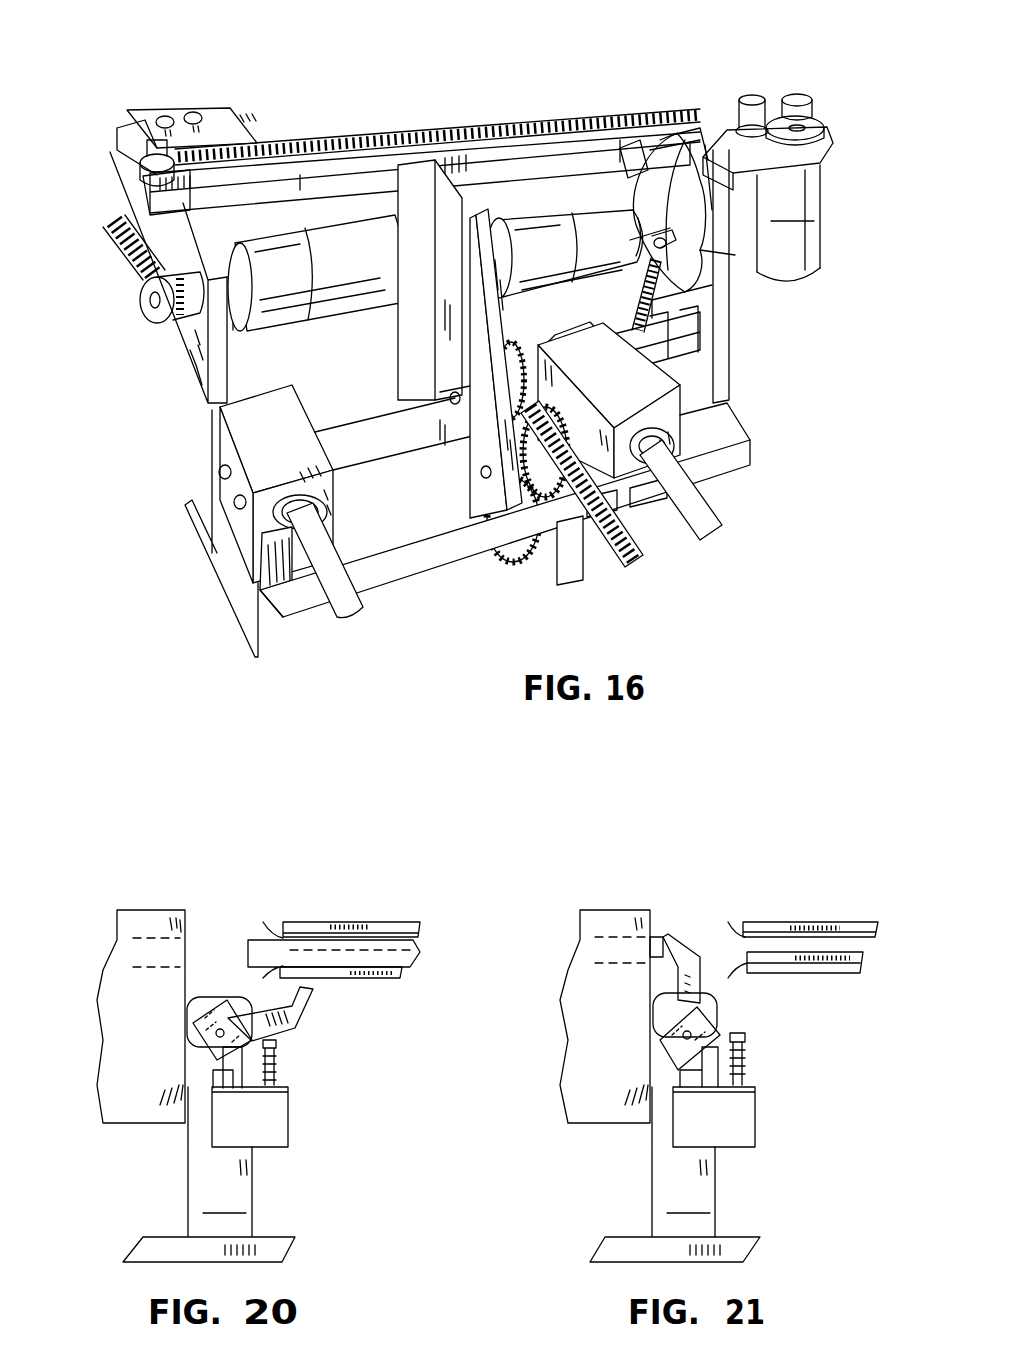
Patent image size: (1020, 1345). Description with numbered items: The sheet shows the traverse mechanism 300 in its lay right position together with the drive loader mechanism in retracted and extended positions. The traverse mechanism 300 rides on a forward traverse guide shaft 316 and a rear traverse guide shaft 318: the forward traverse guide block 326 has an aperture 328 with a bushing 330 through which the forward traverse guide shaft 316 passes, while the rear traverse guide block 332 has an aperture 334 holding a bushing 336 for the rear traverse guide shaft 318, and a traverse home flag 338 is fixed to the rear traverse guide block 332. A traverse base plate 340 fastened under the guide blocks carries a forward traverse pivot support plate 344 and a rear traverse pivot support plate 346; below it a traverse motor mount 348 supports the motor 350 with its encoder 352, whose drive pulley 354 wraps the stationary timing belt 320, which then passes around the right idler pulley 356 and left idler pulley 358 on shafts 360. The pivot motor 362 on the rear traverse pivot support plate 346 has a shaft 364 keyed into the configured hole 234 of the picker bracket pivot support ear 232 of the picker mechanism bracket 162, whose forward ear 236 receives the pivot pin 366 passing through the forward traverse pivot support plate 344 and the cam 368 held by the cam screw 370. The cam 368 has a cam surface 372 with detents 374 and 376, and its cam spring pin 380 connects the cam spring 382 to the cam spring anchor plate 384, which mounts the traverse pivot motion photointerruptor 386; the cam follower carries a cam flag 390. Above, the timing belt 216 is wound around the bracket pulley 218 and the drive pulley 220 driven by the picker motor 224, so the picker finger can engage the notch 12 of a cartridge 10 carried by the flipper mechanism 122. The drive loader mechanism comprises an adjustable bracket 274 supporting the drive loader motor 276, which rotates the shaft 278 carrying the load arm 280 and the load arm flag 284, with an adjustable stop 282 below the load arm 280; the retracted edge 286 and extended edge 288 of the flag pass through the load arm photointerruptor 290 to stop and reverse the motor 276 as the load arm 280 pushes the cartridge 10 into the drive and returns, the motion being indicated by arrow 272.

In FIG. 16, the traverse mechanism 300 is at (436, 82).
In FIG. 16, the picker bracket pivot support ear 232 is at (410, 160).
In FIG. 16, the bracket pulley 218 is at (140, 168).
In FIG. 16, the timing belt 216 is at (553, 120).
In FIG. 16, the picker mechanism bracket 162 is at (498, 158).
In FIG. 16, the traverse home flag 338 is at (222, 587).
In FIG. 16, the shaft 364 is at (360, 300).
In FIG. 16, the configured hole 234 is at (440, 310).
In FIG. 16, the right idler pulley 356 is at (470, 366).
In FIG. 16, the pivot motor 362 is at (558, 268).
In FIG. 16, the pivot pin 366 is at (636, 230).
In FIG. 16, the cam spring pin 380 is at (652, 243).
In FIG. 16, the cam spring 382 is at (629, 295).
In FIG. 16, the cam spring anchor plate 384 is at (600, 345).
In FIG. 16, the cam flag 390 is at (660, 318).
In FIG. 16, the cam surface 372 is at (735, 292).
In FIG. 16, the detent 374 is at (735, 256).
In FIG. 16, the detent 376 is at (672, 135).
In FIG. 16, the cam 368 is at (622, 148).
In FIG. 16, the cam screw 370 is at (708, 148).
In FIG. 16, the picker bracket pivot support ear 236 is at (652, 148).
In FIG. 16, the forward traverse pivot support plate 344 is at (730, 383).
In FIG. 16, the traverse pivot motion photointerruptor 386 is at (712, 352).
In FIG. 16, the picker motor 224 is at (768, 204).
In FIG. 16, the drive pulley 220 is at (825, 105).
In FIG. 16, the rear traverse guide block 332 is at (258, 385).
In FIG. 16, the bushing 336 is at (278, 504).
In FIG. 16, the aperture 334 is at (318, 527).
In FIG. 16, the rear traverse guide shaft 318 is at (355, 620).
In FIG. 16, the traverse base plate 340 is at (330, 435).
In FIG. 16, the left idler pulley 358 is at (500, 515).
In FIG. 16, the shafts 360 is at (448, 397).
In FIG. 16, the rear traverse pivot support plate 346 is at (453, 442).
In FIG. 16, the drive pulley 354 is at (500, 560).
In FIG. 16, the stationary timing belt 320 is at (635, 568).
In FIG. 16, the traverse motor mount 348 is at (565, 586).
In FIG. 16, the forward traverse guide block 326 is at (720, 400).
In FIG. 16, the bushing 330 is at (725, 440).
In FIG. 16, the aperture 328 is at (674, 456).
In FIG. 16, the forward traverse guide shaft 316 is at (718, 528).
In FIG. 16, the motor 350 is at (650, 512).
In FIG. 16, the encoder 352 is at (672, 500).
In FIG. 16, the notch 12 is at (625, 200).
In FIG. 20, the drive loader motor 276 is at (185, 1046).
In FIG. 21, the drive loader motor 276 is at (648, 1030).
In FIG. 20, the adjustable bracket 274 is at (209, 1174).
In FIG. 21, the adjustable bracket 274 is at (675, 1174).
In FIG. 20, the load arm photointerruptor 290 is at (250, 1117).
In FIG. 21, the load arm photointerruptor 290 is at (714, 1117).
In FIG. 20, the shaft 278 is at (222, 1043).
In FIG. 21, the shaft 278 is at (680, 1030).
In FIG. 20, the adjustable stop 282 is at (276, 1065).
In FIG. 21, the adjustable stop 282 is at (746, 1053).
In FIG. 20, the load arm flag 284 is at (216, 1003).
In FIG. 21, the load arm flag 284 is at (705, 1012).
In FIG. 20, the extended edge 288 is at (222, 1055).
In FIG. 21, the extended edge 288 is at (690, 1038).
In FIG. 20, the load arm 280 is at (308, 997).
In FIG. 21, the load arm 280 is at (690, 935).
In FIG. 20, the cartridge 10 is at (258, 940).
In FIG. 21, the cartridge 10 is at (655, 935).
In FIG. 20, the flipper mechanism 122 is at (333, 903).
In FIG. 21, the flipper mechanism 122 is at (806, 903).
In FIG. 20, the direction 272 is at (345, 1067).
In FIG. 21, the direction 272 is at (798, 1107).
In FIG. 21, the retracted edge 286 is at (716, 1042).